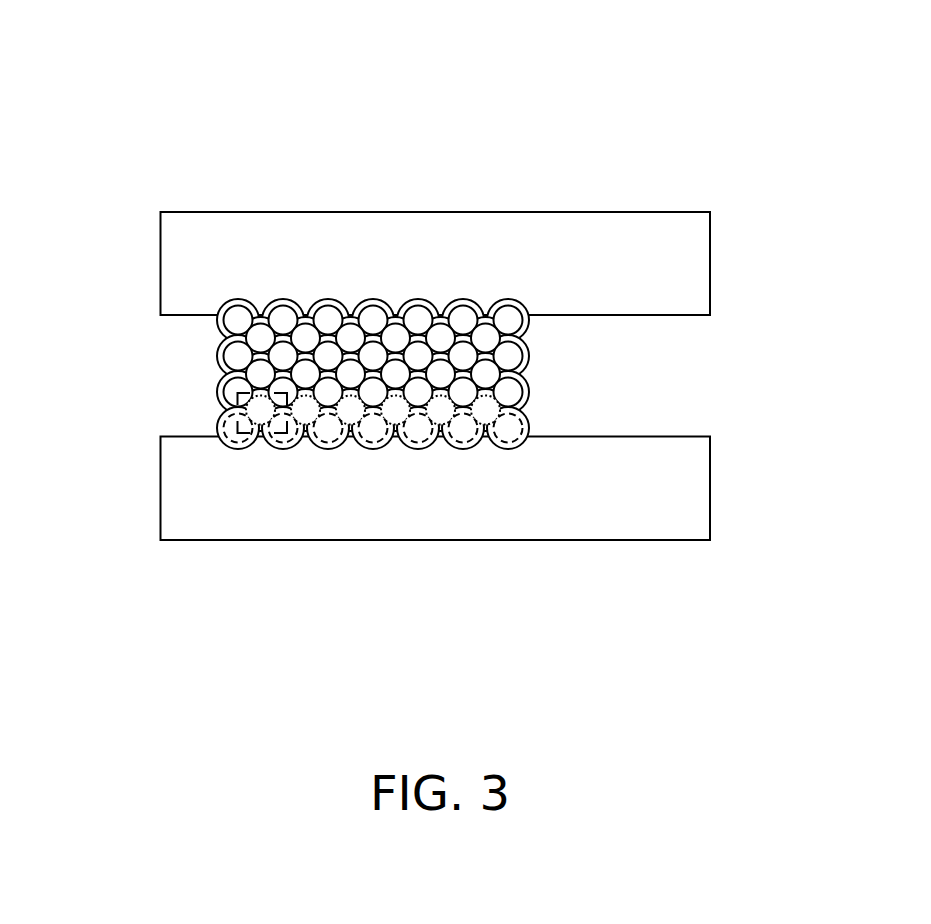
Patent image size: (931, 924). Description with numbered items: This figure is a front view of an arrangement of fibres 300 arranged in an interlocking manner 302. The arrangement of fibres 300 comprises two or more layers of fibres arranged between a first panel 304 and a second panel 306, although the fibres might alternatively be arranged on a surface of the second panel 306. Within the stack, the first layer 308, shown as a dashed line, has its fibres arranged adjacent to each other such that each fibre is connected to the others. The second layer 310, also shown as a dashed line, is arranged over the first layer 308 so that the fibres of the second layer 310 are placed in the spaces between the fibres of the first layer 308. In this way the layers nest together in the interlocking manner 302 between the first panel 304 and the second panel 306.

The arrangement of fibres 300 is at (736, 91).
The interlocking manner 302 is at (169, 413).
The first panel 304 is at (490, 263).
The second panel 306 is at (490, 489).
The first layer 308 is at (524, 423).
The second layer 310 is at (527, 380).